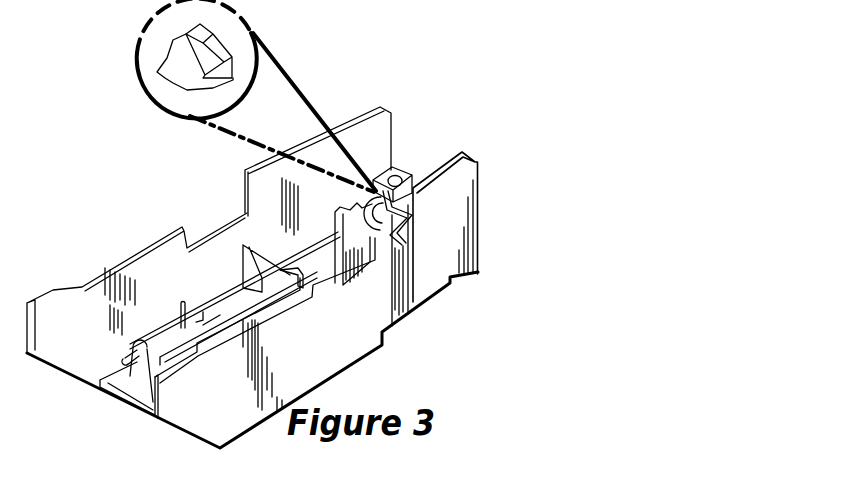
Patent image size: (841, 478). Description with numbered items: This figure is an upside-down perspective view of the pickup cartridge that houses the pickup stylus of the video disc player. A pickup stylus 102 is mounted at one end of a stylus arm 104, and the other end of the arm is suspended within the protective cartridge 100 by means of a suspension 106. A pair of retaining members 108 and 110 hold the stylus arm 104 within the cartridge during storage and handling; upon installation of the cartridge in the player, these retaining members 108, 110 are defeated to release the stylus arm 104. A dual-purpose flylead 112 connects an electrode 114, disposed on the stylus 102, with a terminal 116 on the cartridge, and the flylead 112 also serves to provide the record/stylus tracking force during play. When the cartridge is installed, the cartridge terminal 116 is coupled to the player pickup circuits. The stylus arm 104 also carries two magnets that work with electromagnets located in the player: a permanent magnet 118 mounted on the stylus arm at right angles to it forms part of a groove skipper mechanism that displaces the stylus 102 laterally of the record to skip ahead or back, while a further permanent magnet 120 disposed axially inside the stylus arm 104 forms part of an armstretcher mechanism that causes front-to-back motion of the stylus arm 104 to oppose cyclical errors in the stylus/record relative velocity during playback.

The protective cartridge 100 is at (105, 229).
The pickup stylus 102 is at (172, 62).
The stylus arm 104 is at (165, 330).
The suspension 106 is at (140, 388).
The retaining member 108 is at (310, 233).
The retaining member 110 is at (382, 333).
The dual-purpose flylead 112 is at (413, 220).
The electrode 114 is at (222, 47).
The terminal 116 is at (402, 172).
The permanent magnet 118 is at (180, 303).
The permanent magnet 120 is at (100, 380).